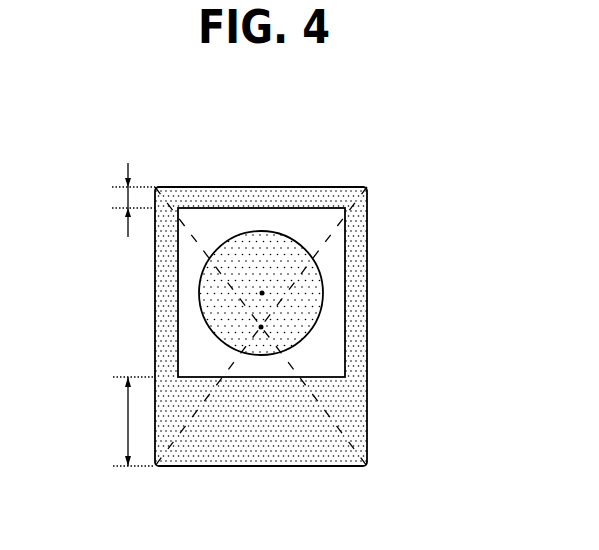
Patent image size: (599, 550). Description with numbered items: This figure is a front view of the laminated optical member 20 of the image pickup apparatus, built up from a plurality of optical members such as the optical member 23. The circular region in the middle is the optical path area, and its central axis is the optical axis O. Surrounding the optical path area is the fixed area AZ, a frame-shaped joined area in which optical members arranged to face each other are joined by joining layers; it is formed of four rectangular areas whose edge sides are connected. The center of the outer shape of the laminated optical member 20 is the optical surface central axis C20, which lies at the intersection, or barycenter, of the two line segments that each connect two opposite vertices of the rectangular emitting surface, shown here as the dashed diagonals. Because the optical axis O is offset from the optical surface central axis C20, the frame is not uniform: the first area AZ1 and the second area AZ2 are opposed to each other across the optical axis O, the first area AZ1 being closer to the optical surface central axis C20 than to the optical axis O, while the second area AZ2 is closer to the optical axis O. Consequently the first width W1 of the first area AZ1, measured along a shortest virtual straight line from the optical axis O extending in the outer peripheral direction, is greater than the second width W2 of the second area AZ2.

The laminated optical member 20 is at (261, 317).
The optical member 23 is at (261, 326).
The fixed area AZ is at (261, 326).
The second area AZ2 is at (224, 184).
The first area AZ1 is at (224, 442).
The optical axis O is at (262, 293).
The optical surface central axis C20 is at (261, 327).
The first width W1 is at (121, 421).
The second width W2 is at (115, 200).